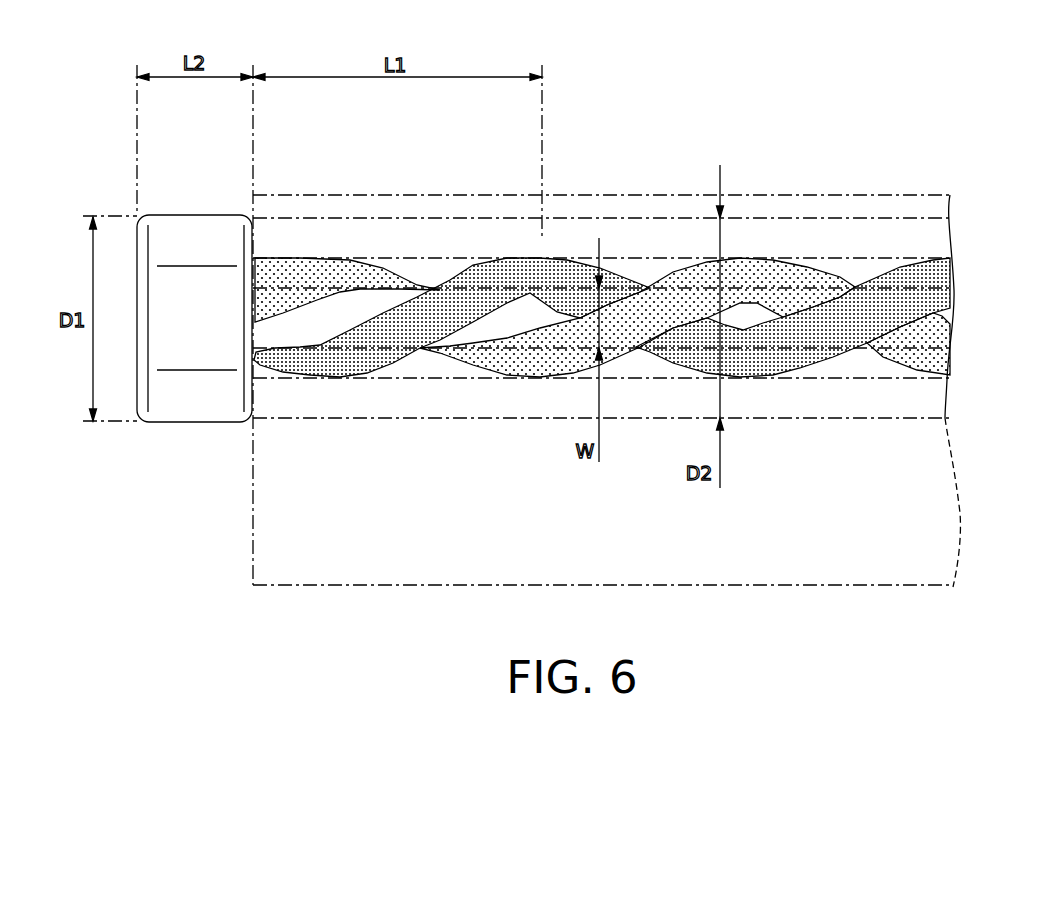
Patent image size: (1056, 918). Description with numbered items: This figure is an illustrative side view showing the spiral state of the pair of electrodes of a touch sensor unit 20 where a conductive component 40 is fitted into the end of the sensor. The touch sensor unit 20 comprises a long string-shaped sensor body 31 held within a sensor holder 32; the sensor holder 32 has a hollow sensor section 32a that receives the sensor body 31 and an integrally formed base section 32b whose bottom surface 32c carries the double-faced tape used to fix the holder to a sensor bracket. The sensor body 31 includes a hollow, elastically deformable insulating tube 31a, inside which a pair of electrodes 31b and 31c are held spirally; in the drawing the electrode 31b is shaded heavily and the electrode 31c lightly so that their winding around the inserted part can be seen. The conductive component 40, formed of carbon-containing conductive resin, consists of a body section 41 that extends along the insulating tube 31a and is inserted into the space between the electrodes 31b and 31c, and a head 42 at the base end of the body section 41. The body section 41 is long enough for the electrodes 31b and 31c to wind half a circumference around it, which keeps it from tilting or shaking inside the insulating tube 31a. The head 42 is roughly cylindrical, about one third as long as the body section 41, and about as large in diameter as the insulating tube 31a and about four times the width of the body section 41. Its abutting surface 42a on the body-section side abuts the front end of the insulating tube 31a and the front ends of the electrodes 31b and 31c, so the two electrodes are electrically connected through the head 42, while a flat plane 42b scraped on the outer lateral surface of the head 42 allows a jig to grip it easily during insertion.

The touch sensor unit 20 is at (580, 109).
The sensor body 31 is at (406, 216).
The insulating tube 31a is at (640, 242).
The electrode 31b is at (780, 347).
The electrode 31c is at (790, 288).
The sensor holder 32 is at (486, 193).
The sensor section 32a is at (780, 206).
The base section 32b is at (822, 502).
The bottom surface 32c is at (604, 586).
The conductive component 40 is at (191, 426).
The body section 41 is at (633, 382).
The head 42 is at (216, 219).
The abutting surface 42a is at (253, 390).
The flat plane 42b is at (173, 331).